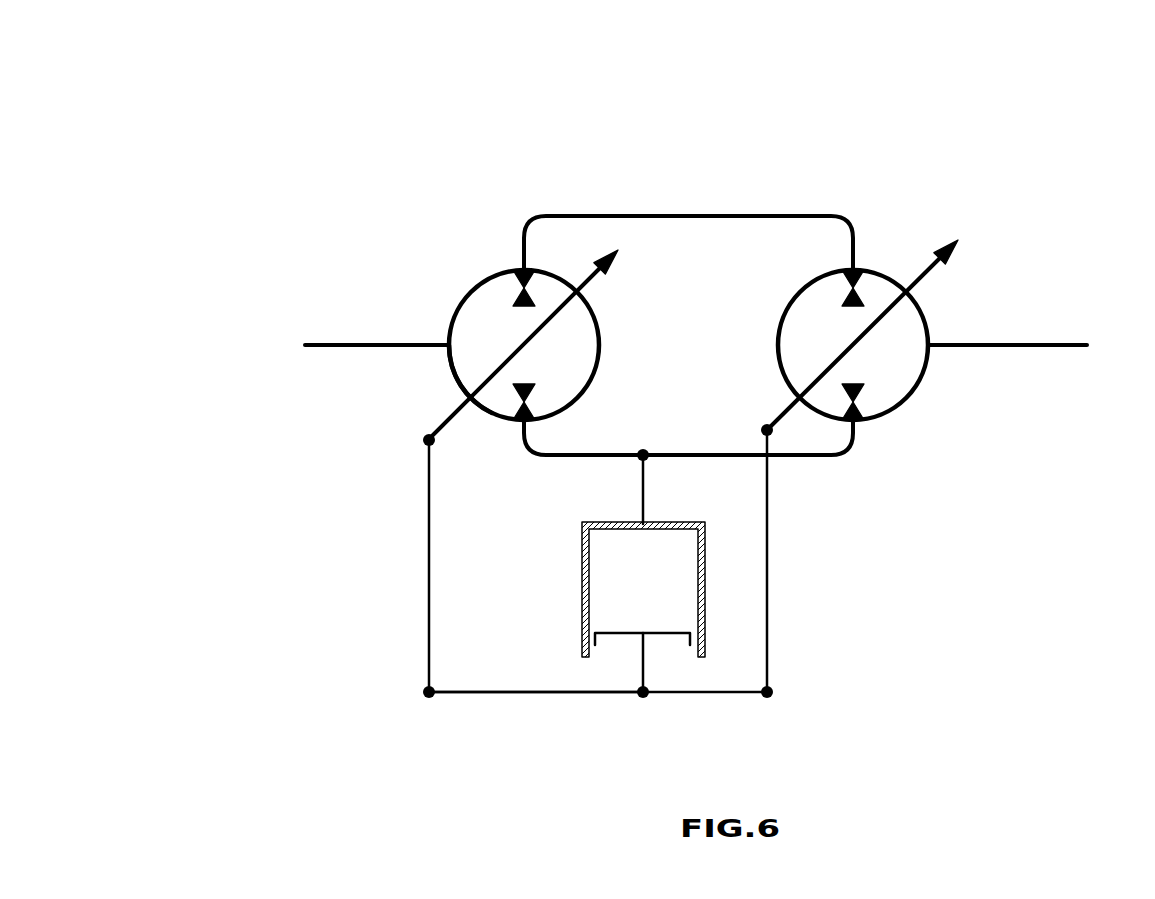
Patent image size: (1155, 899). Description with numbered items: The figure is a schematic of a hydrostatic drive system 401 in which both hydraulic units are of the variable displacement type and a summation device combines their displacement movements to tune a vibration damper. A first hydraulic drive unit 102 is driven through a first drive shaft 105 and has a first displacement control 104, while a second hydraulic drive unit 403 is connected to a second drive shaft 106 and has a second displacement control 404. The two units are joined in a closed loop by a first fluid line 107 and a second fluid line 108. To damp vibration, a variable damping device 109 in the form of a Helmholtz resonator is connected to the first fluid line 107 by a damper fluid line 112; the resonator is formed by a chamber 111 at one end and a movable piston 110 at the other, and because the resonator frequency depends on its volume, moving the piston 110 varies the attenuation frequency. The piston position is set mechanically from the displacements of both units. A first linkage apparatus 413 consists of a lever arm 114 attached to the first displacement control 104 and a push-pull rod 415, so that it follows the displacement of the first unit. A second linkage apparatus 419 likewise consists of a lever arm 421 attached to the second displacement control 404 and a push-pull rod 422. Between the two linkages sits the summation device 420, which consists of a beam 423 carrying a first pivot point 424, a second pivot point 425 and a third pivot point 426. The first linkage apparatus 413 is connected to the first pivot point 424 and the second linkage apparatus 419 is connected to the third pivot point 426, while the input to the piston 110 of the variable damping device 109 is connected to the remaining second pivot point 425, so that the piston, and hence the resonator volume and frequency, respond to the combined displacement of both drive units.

The hydrostatic drive system 401 is at (212, 110).
The first hydraulic drive unit 102 is at (455, 305).
The first displacement control 104 is at (583, 283).
The first drive shaft 105 is at (365, 345).
The second drive shaft 106 is at (1013, 345).
The first fluid line 107 is at (855, 440).
The second fluid line 108 is at (722, 216).
The variable damping device 109 is at (480, 590).
The piston 110 is at (625, 635).
The chamber 111 is at (582, 600).
The damper fluid line 112 is at (642, 487).
The lever arm 114 is at (470, 412).
The second hydraulic drive unit 403 is at (878, 270).
The second displacement control 404 is at (920, 280).
The first linkage apparatus 413 is at (270, 516).
The push-pull rod 415 is at (427, 478).
The second linkage apparatus 419 is at (892, 610).
The summation device 420 is at (788, 762).
The lever arm 421 is at (790, 412).
The push-pull rod 422 is at (768, 553).
The beam 423 is at (533, 694).
The first pivot point 424 is at (429, 694).
The second pivot point 425 is at (643, 694).
The third pivot point 426 is at (767, 694).